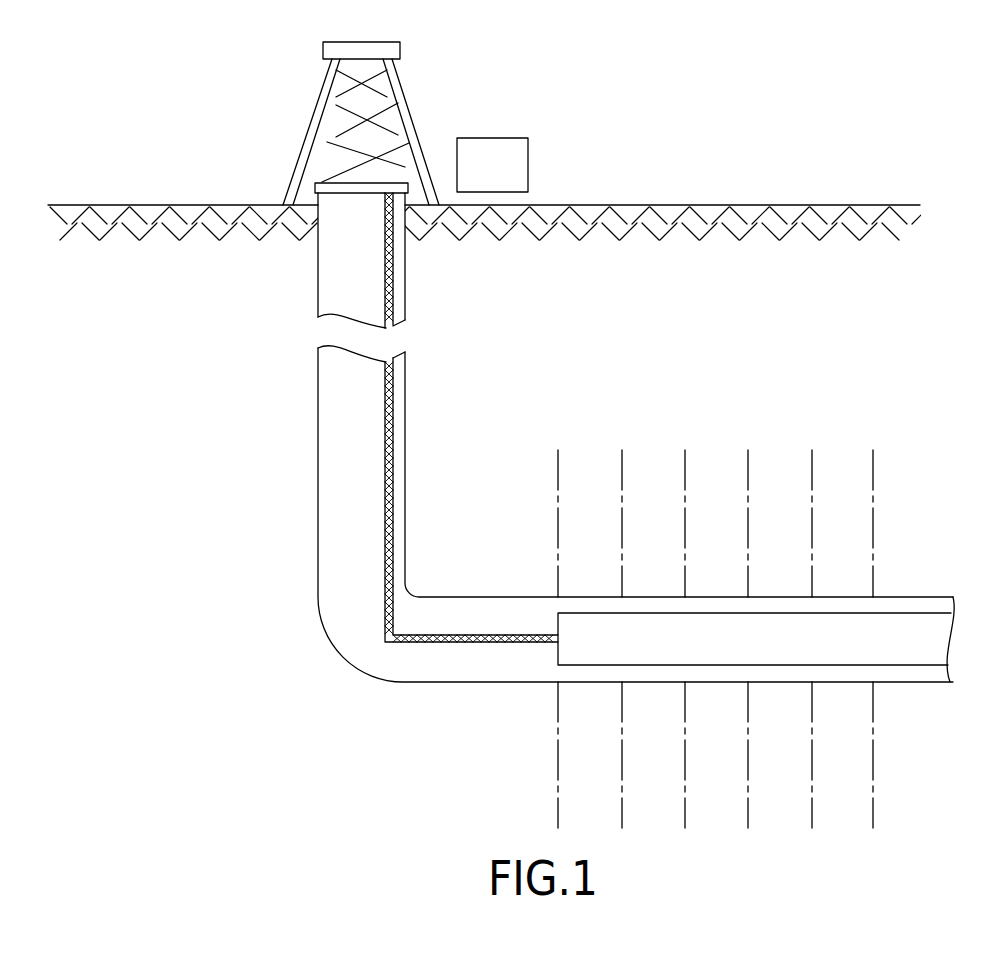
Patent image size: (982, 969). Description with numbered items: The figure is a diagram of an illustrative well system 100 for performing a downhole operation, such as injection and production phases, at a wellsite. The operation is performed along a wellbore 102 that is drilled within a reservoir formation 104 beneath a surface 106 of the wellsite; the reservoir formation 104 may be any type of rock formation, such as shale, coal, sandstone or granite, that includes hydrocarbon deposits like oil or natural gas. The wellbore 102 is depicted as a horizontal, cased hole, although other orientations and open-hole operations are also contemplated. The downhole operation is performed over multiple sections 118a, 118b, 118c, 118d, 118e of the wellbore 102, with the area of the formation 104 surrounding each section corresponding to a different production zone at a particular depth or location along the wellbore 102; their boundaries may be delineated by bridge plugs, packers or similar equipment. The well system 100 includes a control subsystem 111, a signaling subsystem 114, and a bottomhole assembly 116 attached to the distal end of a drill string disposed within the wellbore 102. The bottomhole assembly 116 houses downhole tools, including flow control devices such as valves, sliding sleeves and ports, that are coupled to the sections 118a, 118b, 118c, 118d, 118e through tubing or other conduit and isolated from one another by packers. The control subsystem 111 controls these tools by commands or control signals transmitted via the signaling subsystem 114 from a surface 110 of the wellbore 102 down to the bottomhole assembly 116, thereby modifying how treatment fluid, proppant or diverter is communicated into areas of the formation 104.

The well system 100 is at (255, 86).
The wellbore 102 is at (495, 605).
The reservoir formation 104 is at (788, 360).
The surface 106 is at (725, 205).
The surface of wellbore 110 is at (327, 183).
The control subsystem 111 is at (397, 183).
The signaling subsystem 114 is at (386, 507).
The bottomhole assembly 116 is at (775, 650).
The section 118a is at (617, 493).
The section 118b is at (680, 493).
The section 118c is at (742, 493).
The section 118d is at (805, 493).
The section 118e is at (868, 493).